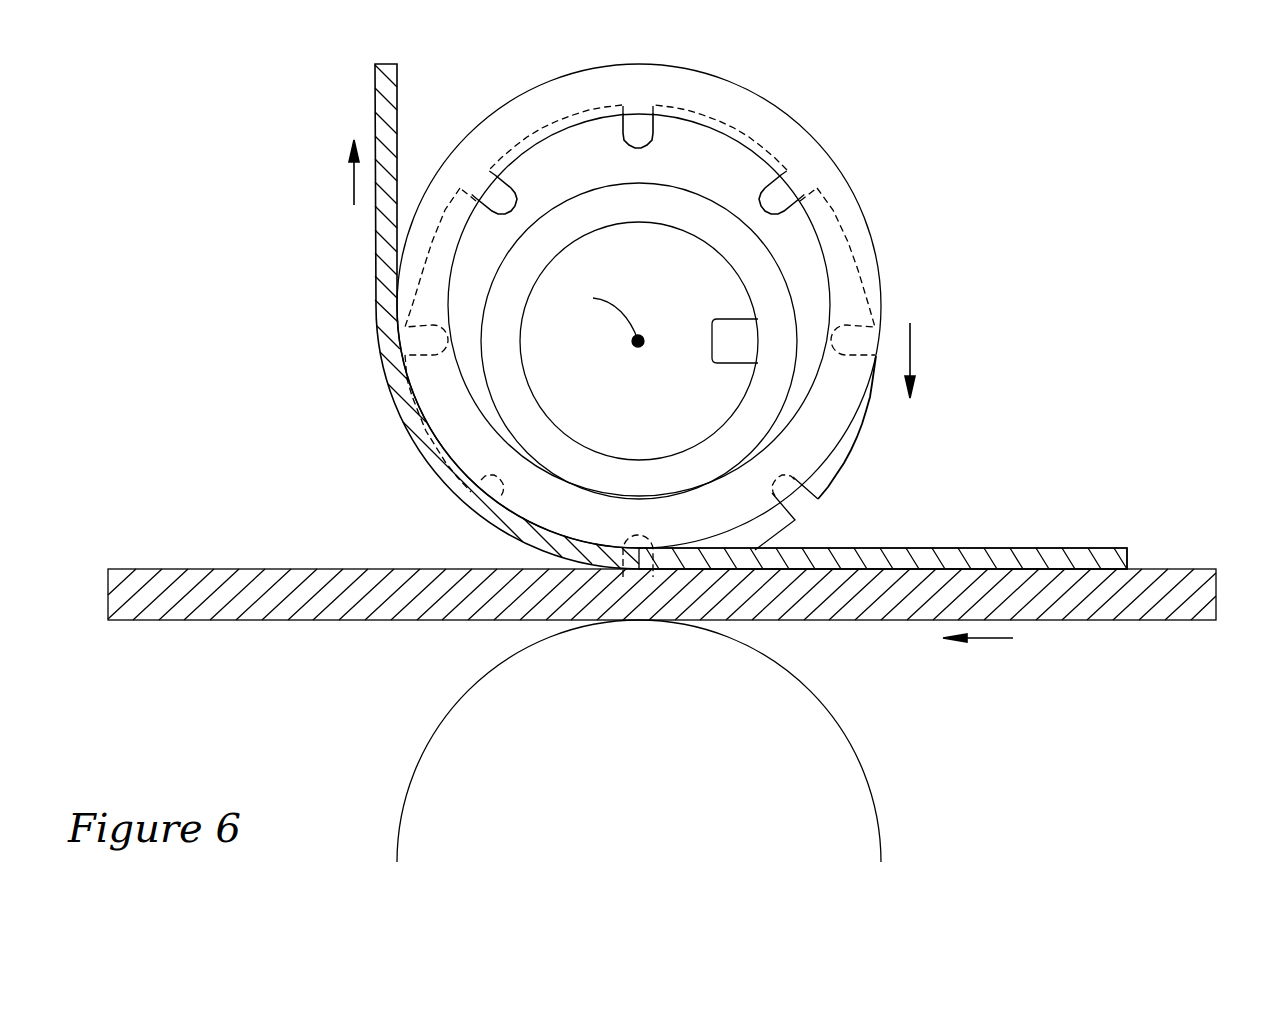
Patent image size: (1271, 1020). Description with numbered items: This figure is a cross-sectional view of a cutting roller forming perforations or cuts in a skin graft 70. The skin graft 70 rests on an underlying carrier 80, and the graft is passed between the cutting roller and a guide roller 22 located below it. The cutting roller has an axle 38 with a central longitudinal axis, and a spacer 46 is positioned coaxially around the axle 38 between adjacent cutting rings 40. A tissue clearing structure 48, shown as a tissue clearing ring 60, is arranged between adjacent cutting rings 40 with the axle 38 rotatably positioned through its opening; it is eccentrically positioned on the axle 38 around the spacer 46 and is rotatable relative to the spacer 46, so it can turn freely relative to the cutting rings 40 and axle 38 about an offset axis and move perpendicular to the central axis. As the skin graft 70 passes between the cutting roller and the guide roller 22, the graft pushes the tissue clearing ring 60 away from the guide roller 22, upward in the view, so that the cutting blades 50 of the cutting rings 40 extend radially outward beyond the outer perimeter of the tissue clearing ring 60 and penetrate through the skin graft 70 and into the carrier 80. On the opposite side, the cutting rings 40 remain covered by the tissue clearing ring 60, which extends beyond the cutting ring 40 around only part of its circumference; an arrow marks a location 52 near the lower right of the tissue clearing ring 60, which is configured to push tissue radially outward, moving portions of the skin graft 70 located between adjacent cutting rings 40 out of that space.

The guide roller 22 is at (458, 727).
The axle 38 is at (636, 344).
The cutting ring 40 is at (560, 158).
The spacer 46 is at (758, 272).
The tissue clearing structure 48 is at (828, 155).
The cutting blade 50 is at (866, 418).
The separation point 52 is at (812, 509).
The tissue clearing ring 60 is at (727, 97).
The skin graft 70 is at (1012, 548).
The carrier 80 is at (1173, 569).